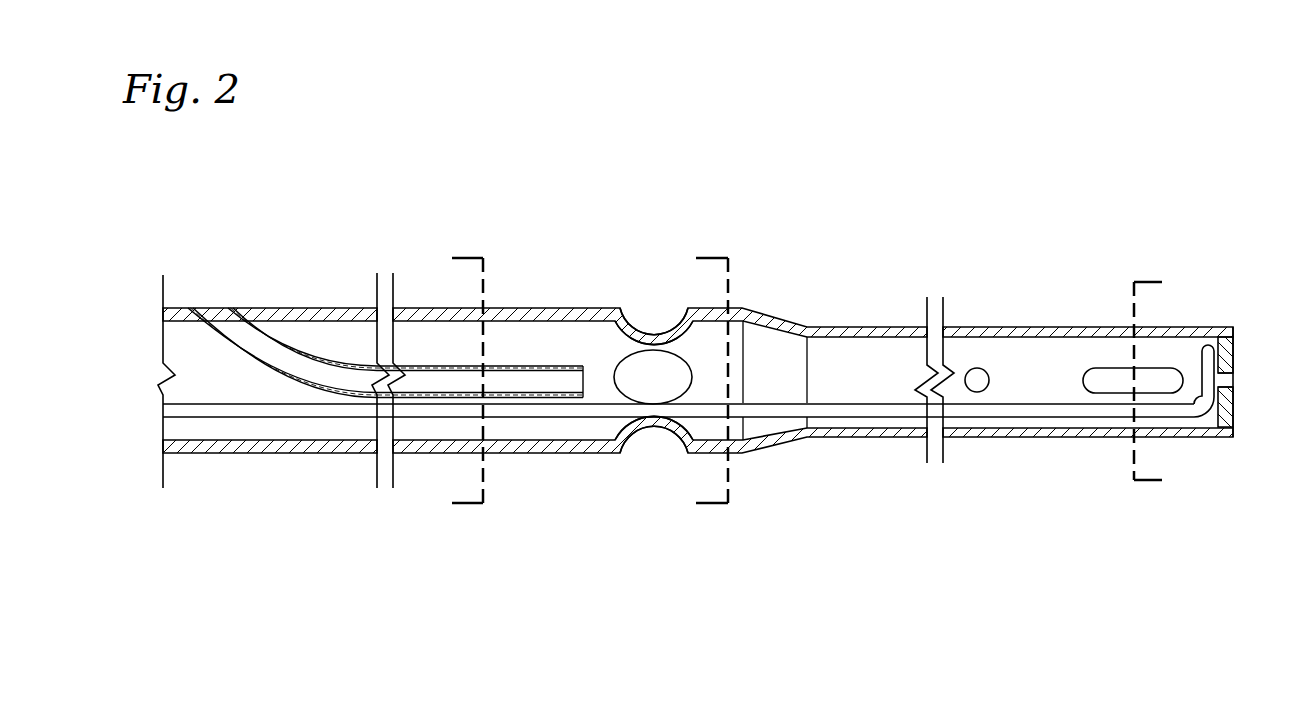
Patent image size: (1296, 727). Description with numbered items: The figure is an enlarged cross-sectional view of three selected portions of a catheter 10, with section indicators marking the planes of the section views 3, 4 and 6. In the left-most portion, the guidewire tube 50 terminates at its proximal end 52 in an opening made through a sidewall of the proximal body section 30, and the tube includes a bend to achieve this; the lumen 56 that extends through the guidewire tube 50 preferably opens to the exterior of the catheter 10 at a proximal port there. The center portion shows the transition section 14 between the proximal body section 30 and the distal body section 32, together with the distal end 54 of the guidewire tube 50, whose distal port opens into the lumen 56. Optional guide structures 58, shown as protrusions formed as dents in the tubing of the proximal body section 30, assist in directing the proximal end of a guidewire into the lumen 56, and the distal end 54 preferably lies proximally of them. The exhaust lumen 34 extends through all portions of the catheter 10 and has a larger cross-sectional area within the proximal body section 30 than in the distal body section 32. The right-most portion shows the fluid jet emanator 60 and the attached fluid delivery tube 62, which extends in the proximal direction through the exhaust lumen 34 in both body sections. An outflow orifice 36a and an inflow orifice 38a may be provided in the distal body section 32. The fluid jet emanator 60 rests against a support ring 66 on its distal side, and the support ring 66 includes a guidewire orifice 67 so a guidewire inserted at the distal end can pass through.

The catheter 10 is at (829, 212).
The transition section 14 is at (605, 533).
The proximal body section 30 is at (332, 306).
The distal body section 32 is at (893, 327).
The exhaust lumen 34 is at (188, 355).
The outflow orifice 36a is at (977, 367).
The inflow orifice 38a is at (1125, 367).
The guidewire tube 50 is at (310, 392).
The proximal end of the guidewire tube 52 is at (227, 306).
The distal end of the guidewire tube 54 is at (586, 376).
The lumen of the guidewire tube 56 is at (253, 348).
The guide structures 58 is at (643, 350).
The fluid jet emanator 60 is at (1201, 360).
The fluid delivery tube 62 is at (258, 419).
The support ring 66 is at (1233, 413).
The guidewire orifice 67 is at (1228, 383).
The section line 3- 3 is at (694, 381).
The section line 4- 4 is at (450, 381).
The section line 6- 6 is at (1166, 381).